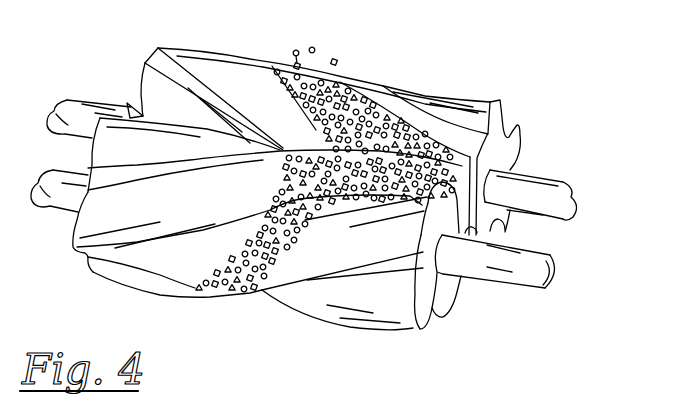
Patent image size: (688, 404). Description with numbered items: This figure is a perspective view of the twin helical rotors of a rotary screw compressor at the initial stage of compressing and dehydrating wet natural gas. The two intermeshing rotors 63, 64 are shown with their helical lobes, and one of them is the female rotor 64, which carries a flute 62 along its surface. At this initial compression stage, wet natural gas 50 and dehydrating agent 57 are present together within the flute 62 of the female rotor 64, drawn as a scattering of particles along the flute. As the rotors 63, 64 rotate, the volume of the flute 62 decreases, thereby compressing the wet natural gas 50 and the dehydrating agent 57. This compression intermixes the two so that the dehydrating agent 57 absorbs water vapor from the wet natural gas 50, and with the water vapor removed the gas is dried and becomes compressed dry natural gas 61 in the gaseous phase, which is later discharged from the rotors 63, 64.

The wet natural gas 50 is at (295, 50).
The dehydrating agent 57 is at (336, 60).
The compressed dry natural gas 61 is at (197, 302).
The flute 62 is at (397, 137).
The rotor 63 is at (444, 293).
The female rotor 64 is at (500, 152).